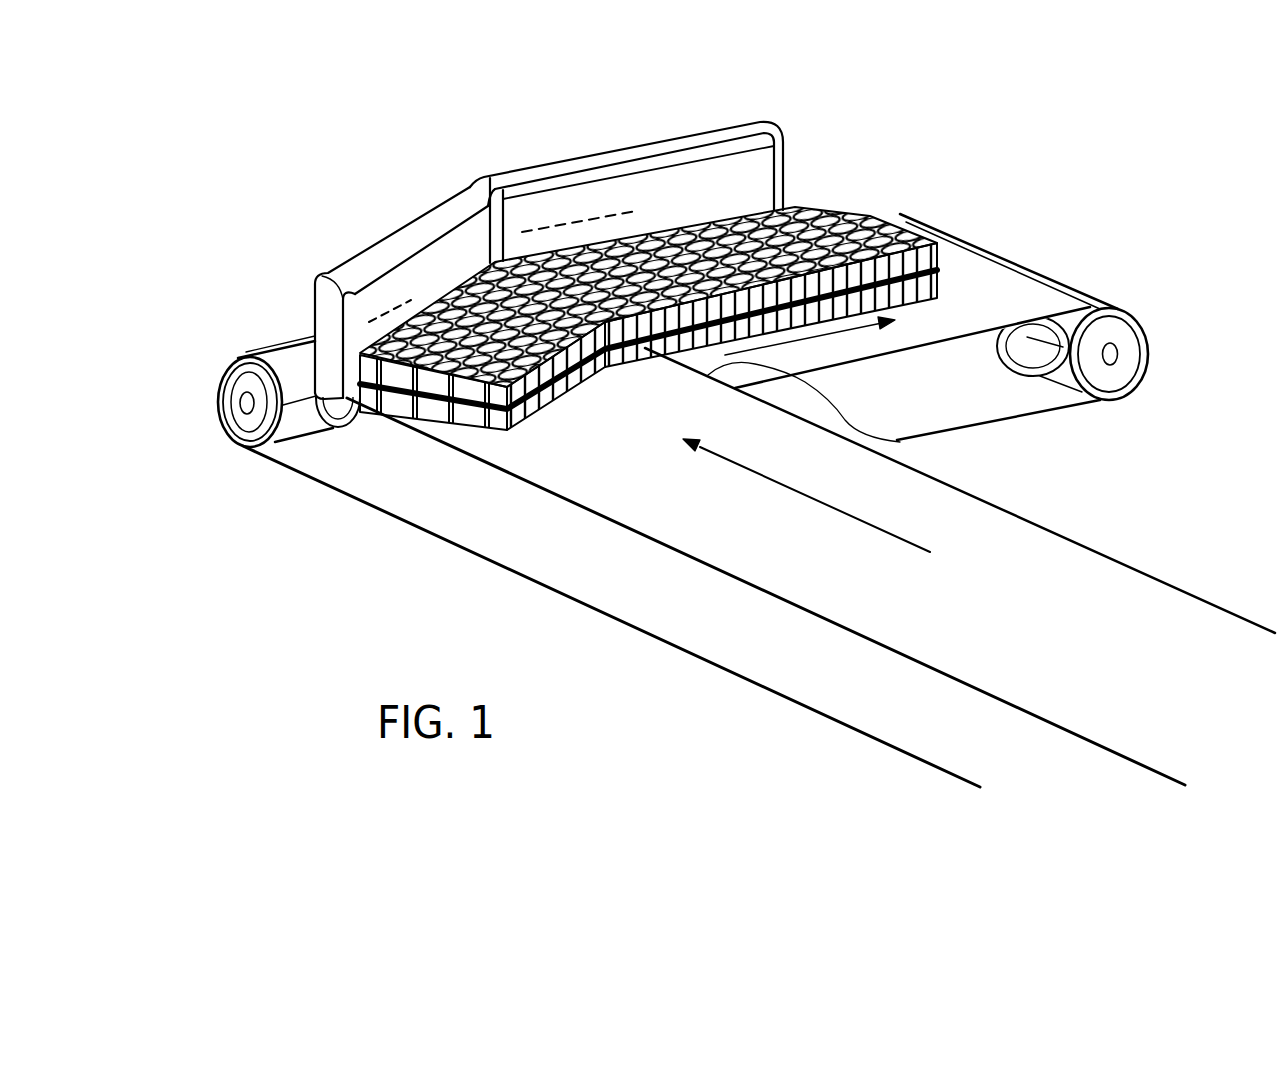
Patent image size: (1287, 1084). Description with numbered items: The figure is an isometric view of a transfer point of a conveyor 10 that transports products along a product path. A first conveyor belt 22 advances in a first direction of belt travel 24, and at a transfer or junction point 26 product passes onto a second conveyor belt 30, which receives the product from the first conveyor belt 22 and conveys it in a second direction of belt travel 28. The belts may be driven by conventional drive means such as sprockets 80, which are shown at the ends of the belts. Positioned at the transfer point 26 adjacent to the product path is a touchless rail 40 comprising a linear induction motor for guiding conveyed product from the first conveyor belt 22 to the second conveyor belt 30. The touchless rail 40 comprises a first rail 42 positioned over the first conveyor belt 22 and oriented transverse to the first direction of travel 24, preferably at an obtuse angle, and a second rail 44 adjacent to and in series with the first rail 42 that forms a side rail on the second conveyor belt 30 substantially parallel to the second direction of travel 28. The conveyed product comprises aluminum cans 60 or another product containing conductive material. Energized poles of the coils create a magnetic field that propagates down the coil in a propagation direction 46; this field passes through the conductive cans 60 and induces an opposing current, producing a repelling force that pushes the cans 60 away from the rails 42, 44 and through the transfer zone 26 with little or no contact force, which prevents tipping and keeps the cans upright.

The conveyor 10 is at (850, 120).
The first conveyor belt 22 is at (742, 552).
The first direction of belt travel 24 is at (735, 462).
The transfer point 26 is at (913, 447).
The second direction of belt travel 28 is at (892, 330).
The second conveyor belt 30 is at (1030, 297).
The touchless rail 40 is at (470, 163).
The first rail 42 is at (401, 228).
The second rail 44 is at (593, 160).
The propagation direction 46 is at (672, 182).
The aluminum cans 60 is at (792, 210).
The sprockets 80 is at (231, 446).